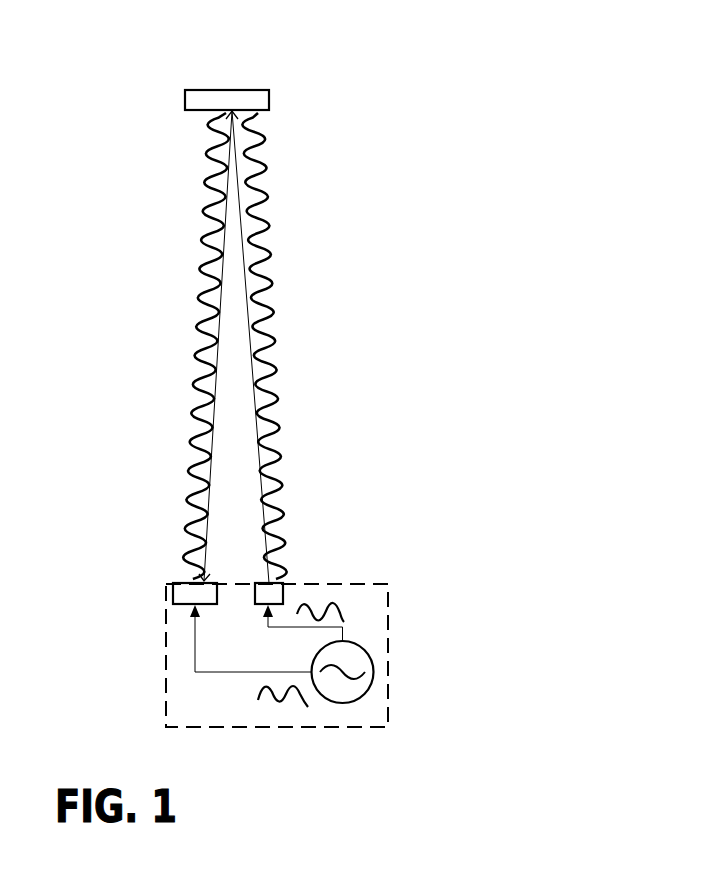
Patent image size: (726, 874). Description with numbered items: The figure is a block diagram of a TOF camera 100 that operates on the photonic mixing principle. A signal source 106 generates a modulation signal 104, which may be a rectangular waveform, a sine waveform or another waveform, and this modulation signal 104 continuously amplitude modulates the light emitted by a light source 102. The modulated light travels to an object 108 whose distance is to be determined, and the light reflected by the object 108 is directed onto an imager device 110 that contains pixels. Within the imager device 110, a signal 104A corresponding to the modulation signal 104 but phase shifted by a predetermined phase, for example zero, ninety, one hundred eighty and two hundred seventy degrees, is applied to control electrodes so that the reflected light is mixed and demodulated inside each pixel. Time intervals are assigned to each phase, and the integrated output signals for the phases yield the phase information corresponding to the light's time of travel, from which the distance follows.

The TOF camera 100 is at (131, 572).
The light source 102 is at (286, 587).
The modulation signal 104 is at (343, 622).
The signal 104A is at (285, 708).
The signal source 106 is at (374, 672).
The object 108 is at (269, 91).
The imager device 110 is at (168, 595).